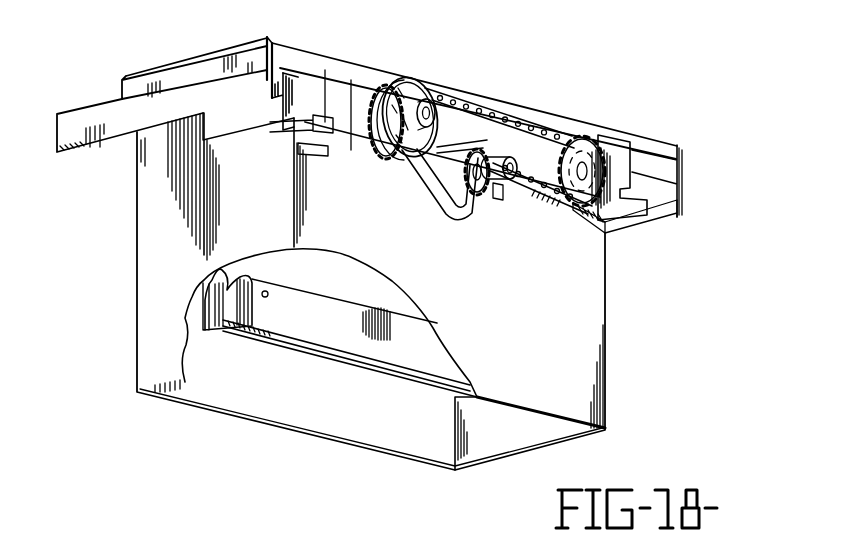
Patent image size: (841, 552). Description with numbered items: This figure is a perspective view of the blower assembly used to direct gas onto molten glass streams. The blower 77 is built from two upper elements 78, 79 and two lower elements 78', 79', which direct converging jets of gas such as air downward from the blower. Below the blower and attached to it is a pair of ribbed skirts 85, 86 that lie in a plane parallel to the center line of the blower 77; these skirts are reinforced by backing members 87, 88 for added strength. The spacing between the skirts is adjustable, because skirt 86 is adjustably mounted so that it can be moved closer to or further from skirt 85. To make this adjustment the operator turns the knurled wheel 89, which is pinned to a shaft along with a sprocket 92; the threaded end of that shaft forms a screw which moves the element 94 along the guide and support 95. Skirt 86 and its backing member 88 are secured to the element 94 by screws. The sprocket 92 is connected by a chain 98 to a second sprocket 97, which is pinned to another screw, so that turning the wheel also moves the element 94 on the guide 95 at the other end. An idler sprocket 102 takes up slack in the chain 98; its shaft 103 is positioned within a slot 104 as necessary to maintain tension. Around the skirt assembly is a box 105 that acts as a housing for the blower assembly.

The blower 77 is at (172, 62).
The upper blower element 78 is at (166, 68).
The lower blower element 78' is at (175, 121).
The upper blower element 79 is at (260, 73).
The lower blower element 79' is at (477, 118).
The skirt 85 is at (211, 331).
The skirt 86 is at (227, 292).
The backing member 87 is at (203, 300).
The backing member 88 is at (392, 304).
The knurled wheel 89 is at (410, 91).
The sprocket 92 is at (381, 148).
The element 94 is at (311, 152).
The guide and support 95 is at (296, 126).
The sprocket 97 is at (586, 140).
The chain 98 is at (487, 112).
The idler sprocket 102 is at (490, 198).
The shaft 103 is at (504, 191).
The slot 104 is at (463, 198).
The box 105 is at (596, 287).